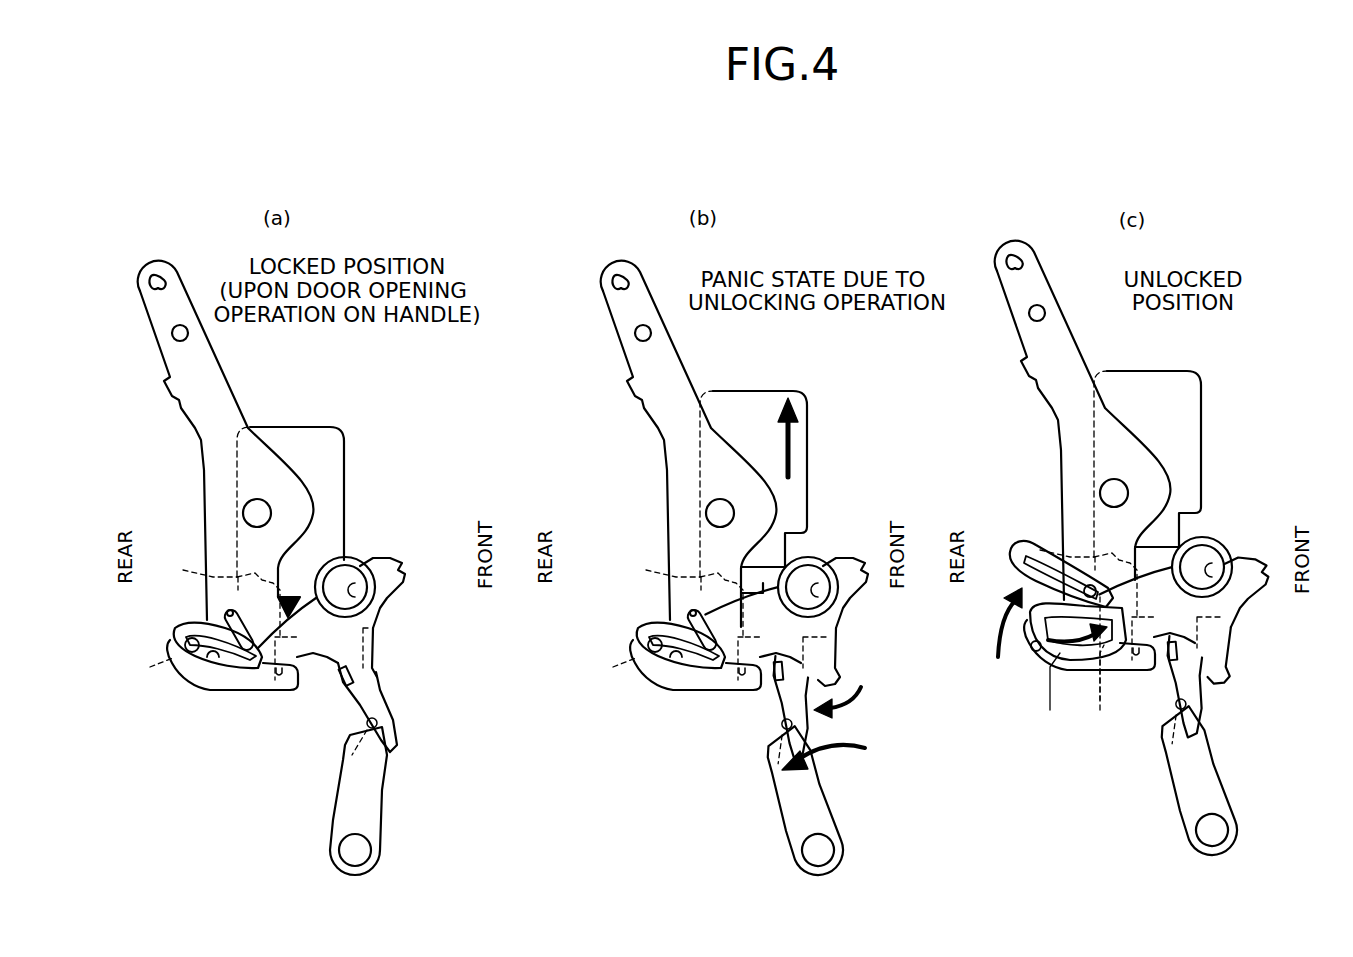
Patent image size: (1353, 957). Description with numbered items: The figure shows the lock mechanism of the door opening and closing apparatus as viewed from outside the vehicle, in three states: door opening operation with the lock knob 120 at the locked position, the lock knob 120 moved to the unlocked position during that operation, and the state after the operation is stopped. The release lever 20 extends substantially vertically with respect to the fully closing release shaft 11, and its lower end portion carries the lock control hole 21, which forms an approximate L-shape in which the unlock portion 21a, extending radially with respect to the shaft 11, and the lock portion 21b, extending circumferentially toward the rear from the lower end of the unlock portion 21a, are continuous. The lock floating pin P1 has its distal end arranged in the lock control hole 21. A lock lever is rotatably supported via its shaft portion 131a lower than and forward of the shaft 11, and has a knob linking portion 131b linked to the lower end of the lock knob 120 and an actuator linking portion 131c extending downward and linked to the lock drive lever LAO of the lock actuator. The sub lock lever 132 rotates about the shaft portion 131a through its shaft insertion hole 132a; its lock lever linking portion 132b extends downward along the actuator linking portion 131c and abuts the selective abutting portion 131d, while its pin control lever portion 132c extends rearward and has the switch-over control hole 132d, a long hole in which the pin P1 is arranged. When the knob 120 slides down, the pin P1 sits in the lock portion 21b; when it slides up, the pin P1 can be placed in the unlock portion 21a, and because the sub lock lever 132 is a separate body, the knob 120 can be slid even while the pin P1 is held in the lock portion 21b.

The release lever 20 is at (162, 270).
The lock knob 120 is at (316, 427).
The fully closing release shaft 11 is at (255, 513).
The shaft portion 131a is at (345, 583).
The knob linking portion 131b is at (1094, 550).
The actuator linking portion 131c is at (385, 700).
The selective abutting portion 131d is at (340, 684).
The sub lock lever 132 is at (1213, 600).
The shaft insertion hole 132a is at (378, 602).
The lock lever linking portion 132b is at (373, 652).
The pin control lever portion 132c is at (262, 670).
The switch-over control hole 132d is at (216, 660).
The lock control hole 21 is at (589, 677).
The unlock portion 21a is at (208, 620).
The lock portion 21b is at (582, 701).
The lock floating pin P1 is at (193, 653).
The lock drive lever LAO is at (370, 805).